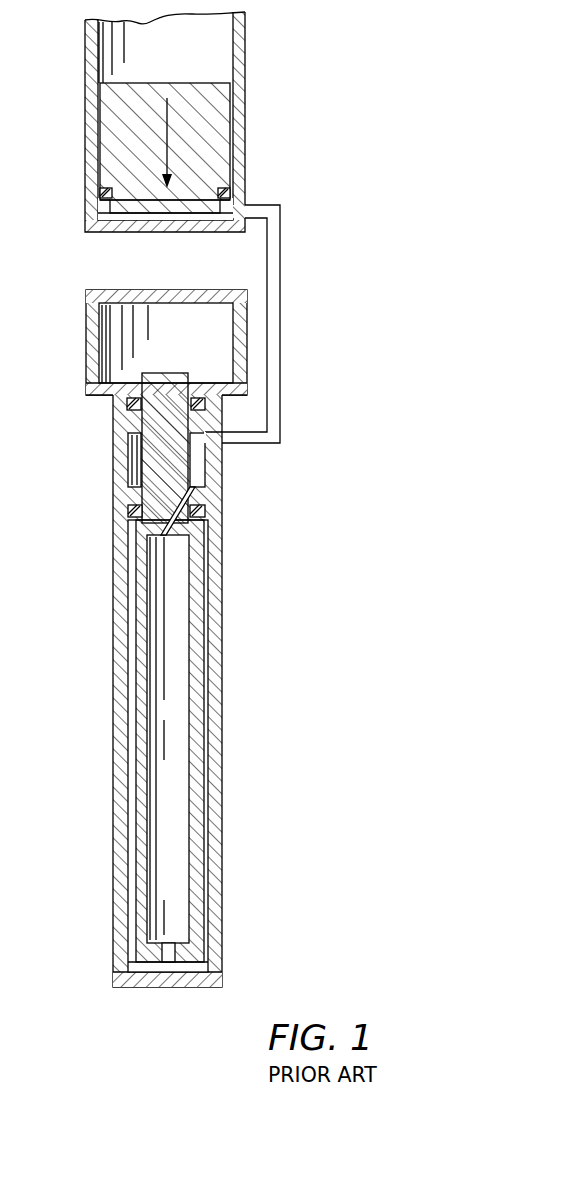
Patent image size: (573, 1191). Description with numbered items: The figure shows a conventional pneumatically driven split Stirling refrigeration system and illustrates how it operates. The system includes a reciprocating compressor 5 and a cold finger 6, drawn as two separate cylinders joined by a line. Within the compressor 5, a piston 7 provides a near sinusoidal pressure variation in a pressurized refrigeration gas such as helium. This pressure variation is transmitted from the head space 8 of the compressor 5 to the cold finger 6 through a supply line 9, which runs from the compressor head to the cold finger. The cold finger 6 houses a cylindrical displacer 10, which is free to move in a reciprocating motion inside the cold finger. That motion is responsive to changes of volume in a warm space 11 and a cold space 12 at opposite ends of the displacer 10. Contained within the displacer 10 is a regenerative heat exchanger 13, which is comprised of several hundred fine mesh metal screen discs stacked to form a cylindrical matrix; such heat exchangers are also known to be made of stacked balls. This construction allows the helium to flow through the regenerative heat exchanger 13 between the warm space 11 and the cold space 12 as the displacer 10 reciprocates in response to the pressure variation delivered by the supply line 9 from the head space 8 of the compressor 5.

The reciprocating compressor 5 is at (252, 128).
The cold finger 6 is at (106, 835).
The piston 7 is at (108, 115).
The head space 8 is at (130, 216).
The supply line 9 is at (267, 250).
The cylindrical displacer 10 is at (137, 658).
The warm space 11 is at (200, 468).
The cold space 12 is at (200, 967).
The regenerative heat exchanger 13 is at (180, 597).